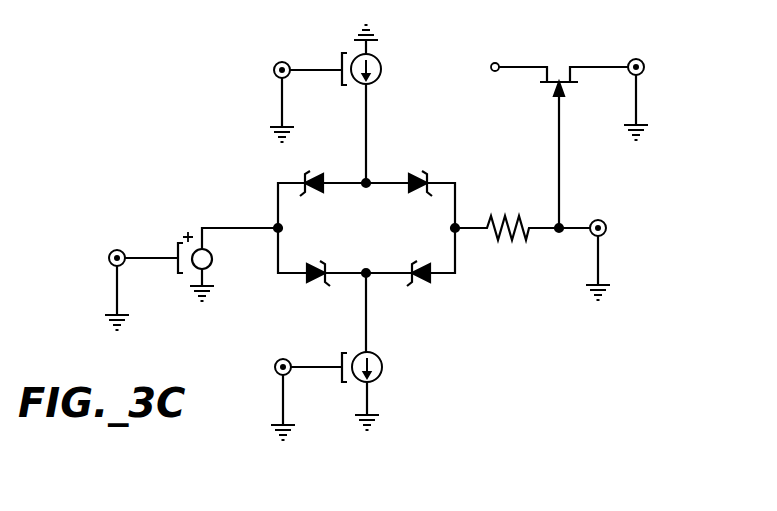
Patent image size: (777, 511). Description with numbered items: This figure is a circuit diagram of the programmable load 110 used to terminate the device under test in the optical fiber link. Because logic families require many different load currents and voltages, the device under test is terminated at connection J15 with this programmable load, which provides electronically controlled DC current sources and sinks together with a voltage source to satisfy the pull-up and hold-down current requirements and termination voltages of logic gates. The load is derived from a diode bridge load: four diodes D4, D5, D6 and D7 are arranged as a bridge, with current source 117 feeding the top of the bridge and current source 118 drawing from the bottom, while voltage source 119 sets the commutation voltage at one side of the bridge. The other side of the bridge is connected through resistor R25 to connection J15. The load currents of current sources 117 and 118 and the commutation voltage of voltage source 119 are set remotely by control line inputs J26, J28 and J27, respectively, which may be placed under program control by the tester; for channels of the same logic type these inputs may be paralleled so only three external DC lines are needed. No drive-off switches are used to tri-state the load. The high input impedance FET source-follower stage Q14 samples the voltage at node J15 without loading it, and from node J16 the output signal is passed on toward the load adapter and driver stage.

The programmable load 110 is at (112, 107).
The current source 117 is at (381, 65).
The current source 118 is at (382, 364).
The voltage source 119 is at (210, 267).
The control line input J26 is at (278, 62).
The control line input J27 is at (113, 250).
The control line input J28 is at (278, 360).
The connection J15 is at (604, 222).
The node J16 is at (642, 60).
The FET source-follower stage Q14 is at (566, 78).
The resistor R25 is at (520, 216).
The diode D4 is at (414, 176).
The diode D5 is at (420, 281).
The diode D6 is at (325, 177).
The diode D7 is at (311, 281).